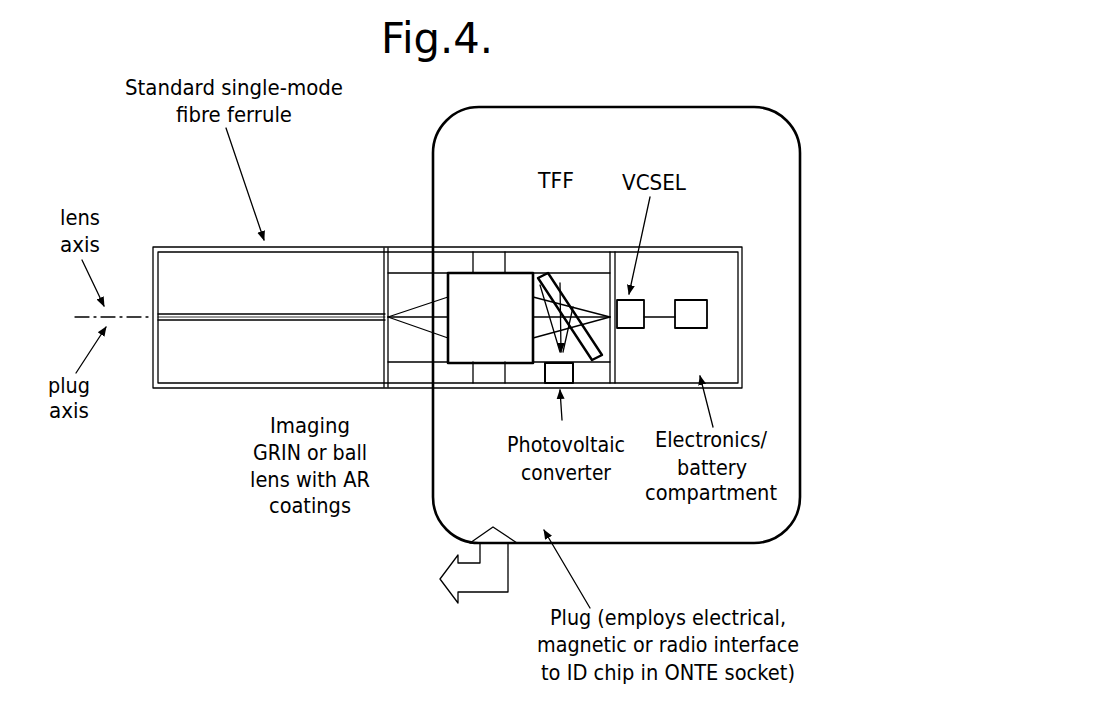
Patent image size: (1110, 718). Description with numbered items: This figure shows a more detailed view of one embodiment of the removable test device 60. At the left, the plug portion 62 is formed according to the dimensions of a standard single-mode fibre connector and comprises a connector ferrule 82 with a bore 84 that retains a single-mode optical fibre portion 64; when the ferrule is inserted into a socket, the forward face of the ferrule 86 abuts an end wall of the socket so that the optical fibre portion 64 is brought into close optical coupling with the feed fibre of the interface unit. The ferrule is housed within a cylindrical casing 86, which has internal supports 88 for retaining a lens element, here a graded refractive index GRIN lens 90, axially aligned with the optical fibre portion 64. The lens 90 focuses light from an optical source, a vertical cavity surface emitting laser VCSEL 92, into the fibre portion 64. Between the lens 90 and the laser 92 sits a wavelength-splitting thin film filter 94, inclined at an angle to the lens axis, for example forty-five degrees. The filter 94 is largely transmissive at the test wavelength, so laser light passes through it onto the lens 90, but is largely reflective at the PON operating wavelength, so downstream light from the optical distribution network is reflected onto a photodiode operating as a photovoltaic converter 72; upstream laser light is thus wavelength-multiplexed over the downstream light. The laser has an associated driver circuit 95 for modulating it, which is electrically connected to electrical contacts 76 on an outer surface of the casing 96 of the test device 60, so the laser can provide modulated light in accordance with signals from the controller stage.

The removable test device 60 is at (368, 544).
The plug portion 62 is at (182, 392).
The optical fibre portion 64 is at (300, 314).
The photovoltaic converter 72 is at (573, 374).
The electrical contacts 76 is at (474, 582).
The connector ferrule 82 is at (374, 247).
The bore 84 is at (192, 314).
The cylindrical casing 86 is at (460, 247).
The internal supports 88 is at (510, 247).
The GRIN lens 90 is at (357, 432).
The vertical cavity surface emitting laser (VCSEL) 92 is at (630, 300).
The thin film filter 94 is at (563, 296).
The driver circuit 95 is at (707, 313).
The casing 96 is at (802, 450).